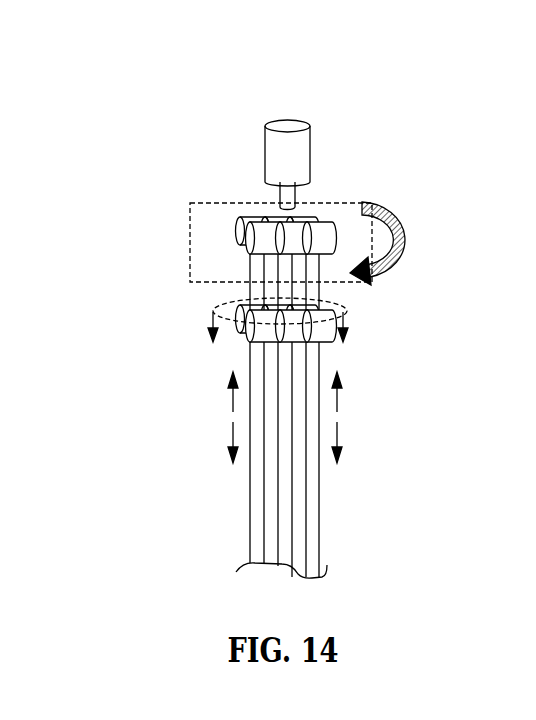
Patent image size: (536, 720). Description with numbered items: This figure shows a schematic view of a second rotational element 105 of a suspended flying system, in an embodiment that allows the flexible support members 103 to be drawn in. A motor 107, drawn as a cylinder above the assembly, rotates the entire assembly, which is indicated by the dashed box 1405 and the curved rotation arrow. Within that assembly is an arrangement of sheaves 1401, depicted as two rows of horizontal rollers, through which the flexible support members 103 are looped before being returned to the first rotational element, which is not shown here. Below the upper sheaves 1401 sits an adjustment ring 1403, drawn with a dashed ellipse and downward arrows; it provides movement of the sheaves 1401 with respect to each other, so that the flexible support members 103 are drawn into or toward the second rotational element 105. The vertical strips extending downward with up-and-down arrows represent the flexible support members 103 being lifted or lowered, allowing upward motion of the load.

The flexible support members 103 is at (308, 527).
The second rotational element 105 is at (377, 159).
The motor 107 is at (302, 122).
The sheaves 1401 is at (253, 218).
The adjustment ring 1403 is at (340, 308).
The roller unit 1405 is at (190, 258).